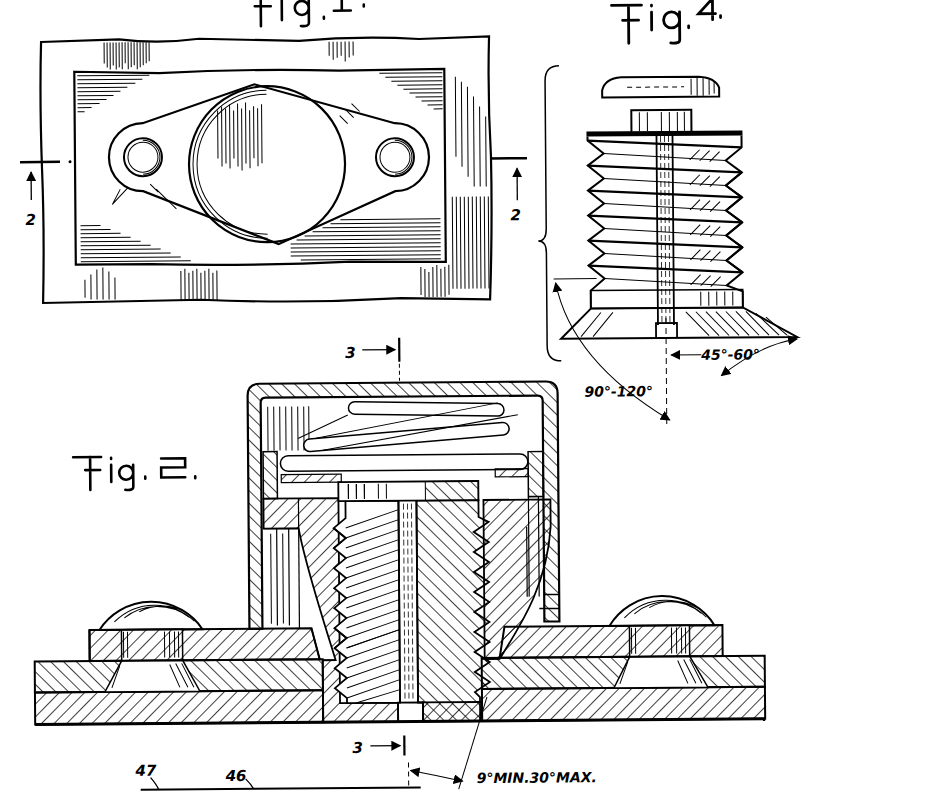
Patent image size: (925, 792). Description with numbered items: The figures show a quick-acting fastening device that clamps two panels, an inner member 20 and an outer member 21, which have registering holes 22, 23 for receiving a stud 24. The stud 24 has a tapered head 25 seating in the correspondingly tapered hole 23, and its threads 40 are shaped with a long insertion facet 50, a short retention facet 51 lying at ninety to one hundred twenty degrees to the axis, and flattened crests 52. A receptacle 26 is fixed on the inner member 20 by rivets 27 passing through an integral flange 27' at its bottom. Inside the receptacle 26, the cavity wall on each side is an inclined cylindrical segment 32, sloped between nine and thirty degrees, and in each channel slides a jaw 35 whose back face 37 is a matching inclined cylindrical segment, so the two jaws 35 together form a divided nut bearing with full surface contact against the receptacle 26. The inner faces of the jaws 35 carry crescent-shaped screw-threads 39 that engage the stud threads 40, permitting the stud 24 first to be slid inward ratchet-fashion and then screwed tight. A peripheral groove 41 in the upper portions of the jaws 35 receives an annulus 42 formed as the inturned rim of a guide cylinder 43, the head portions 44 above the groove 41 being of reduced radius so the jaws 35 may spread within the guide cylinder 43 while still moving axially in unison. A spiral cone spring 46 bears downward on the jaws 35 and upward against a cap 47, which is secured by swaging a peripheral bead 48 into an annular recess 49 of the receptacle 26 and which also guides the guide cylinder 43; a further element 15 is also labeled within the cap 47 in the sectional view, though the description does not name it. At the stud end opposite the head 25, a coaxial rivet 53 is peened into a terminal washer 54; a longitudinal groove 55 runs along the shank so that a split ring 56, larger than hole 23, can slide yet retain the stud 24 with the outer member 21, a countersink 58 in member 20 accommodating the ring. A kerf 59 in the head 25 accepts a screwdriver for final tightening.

In FIG. 2, the retaining plate 15 is at (470, 490).
In FIG. 1, the inner member 20 is at (393, 72).
In FIG. 2, the inner member 20 is at (760, 658).
In FIG. 1, the outer member 21 is at (452, 33).
In FIG. 2, the outer member 21 is at (745, 722).
In FIG. 2, the hole 22 is at (555, 630).
In FIG. 2, the hole 23 is at (318, 664).
In FIG. 4, the stud 24 is at (598, 132).
In FIG. 2, the stud 24 is at (350, 690).
In FIG. 4, the head 25 is at (616, 340).
In FIG. 2, the head 25 is at (490, 700).
In FIG. 2, the receptacle 26 is at (310, 655).
In FIG. 1, the rivets 27 is at (270, 137).
In FIG. 2, the rivets 27 is at (411, 629).
In FIG. 1, the flange 27' is at (114, 202).
In FIG. 2, the flange 27' is at (63, 632).
In FIG. 2, the cylindrical segment 32 is at (280, 572).
In FIG. 2, the jaw 35 is at (540, 540).
In FIG. 2, the back face 37 is at (275, 560).
In FIG. 2, the screw-threads 39 is at (470, 462).
In FIG. 4, the threads 40 is at (750, 172).
In FIG. 2, the threads 40 is at (370, 645).
In FIG. 2, the peripheral groove 41 is at (542, 500).
In FIG. 2, the annulus 42 is at (545, 522).
In FIG. 2, the guide cylinder 43 is at (546, 470).
In FIG. 2, the head portions 44 is at (262, 492).
In FIG. 2, the spiral cone spring 46 is at (478, 420).
In FIG. 1, the cap 47 is at (240, 96).
In FIG. 2, the cap 47 is at (264, 386).
In FIG. 2, the peripheral bead 48 is at (555, 614).
In FIG. 2, the annular recess 49 is at (562, 600).
In FIG. 4, the insertion facet 50 is at (748, 224).
In FIG. 2, the insertion facet 50 is at (282, 545).
In FIG. 4, the retention facet 51 is at (748, 257).
In FIG. 2, the retention facet 51 is at (390, 655).
In FIG. 4, the flattened crest 52 is at (748, 193).
In FIG. 2, the flattened crest 52 is at (300, 596).
In FIG. 4, the rivet 53 is at (700, 122).
In FIG. 2, the rivet 53 is at (428, 500).
In FIG. 4, the terminal washer 54 is at (722, 90).
In FIG. 2, the terminal washer 54 is at (395, 470).
In FIG. 4, the longitudinal groove 55 is at (675, 320).
In FIG. 2, the longitudinal groove 55 is at (416, 708).
In FIG. 2, the split ring 56 is at (330, 665).
In FIG. 2, the countersink 58 is at (290, 692).
In FIG. 4, the kerf 59 is at (654, 342).
In FIG. 2, the kerf 59 is at (400, 726).